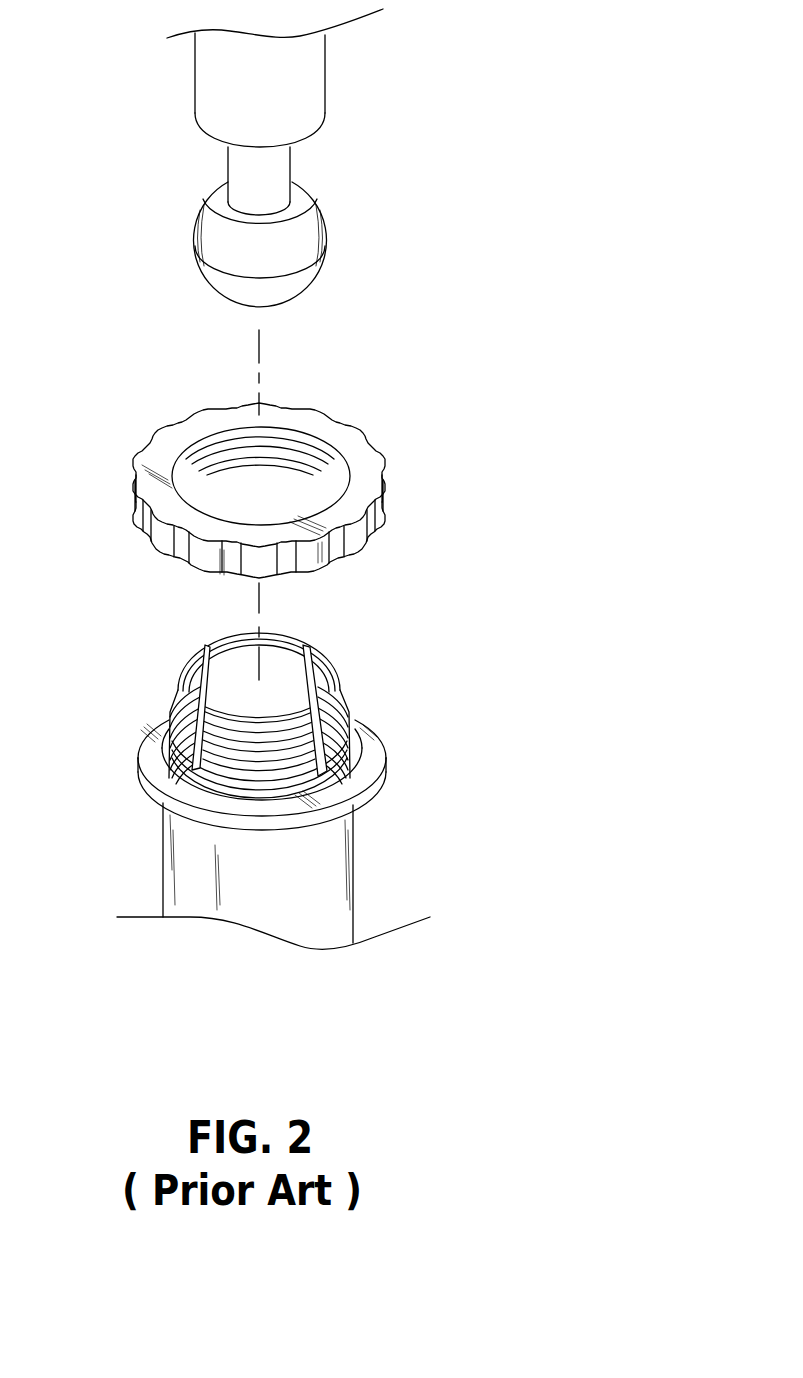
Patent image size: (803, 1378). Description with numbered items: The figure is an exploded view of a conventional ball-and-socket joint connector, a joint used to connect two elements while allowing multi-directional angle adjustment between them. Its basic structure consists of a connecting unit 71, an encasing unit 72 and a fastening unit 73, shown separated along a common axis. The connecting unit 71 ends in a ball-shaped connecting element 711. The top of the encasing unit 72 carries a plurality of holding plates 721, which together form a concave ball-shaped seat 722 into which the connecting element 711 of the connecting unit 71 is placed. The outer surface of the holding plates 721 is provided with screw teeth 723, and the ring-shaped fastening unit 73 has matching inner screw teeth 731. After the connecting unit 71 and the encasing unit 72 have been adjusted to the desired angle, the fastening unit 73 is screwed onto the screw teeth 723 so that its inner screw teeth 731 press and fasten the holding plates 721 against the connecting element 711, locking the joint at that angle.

The connecting unit 71 is at (312, 89).
The ball-shaped connecting element 711 is at (303, 228).
The encasing unit 72 is at (327, 873).
The holding plates 721 is at (183, 682).
The concave ball-shaped seat 722 is at (275, 658).
The screw teeth 723 is at (333, 727).
The fastening unit 73 is at (363, 470).
The inner screw teeth 731 is at (323, 455).